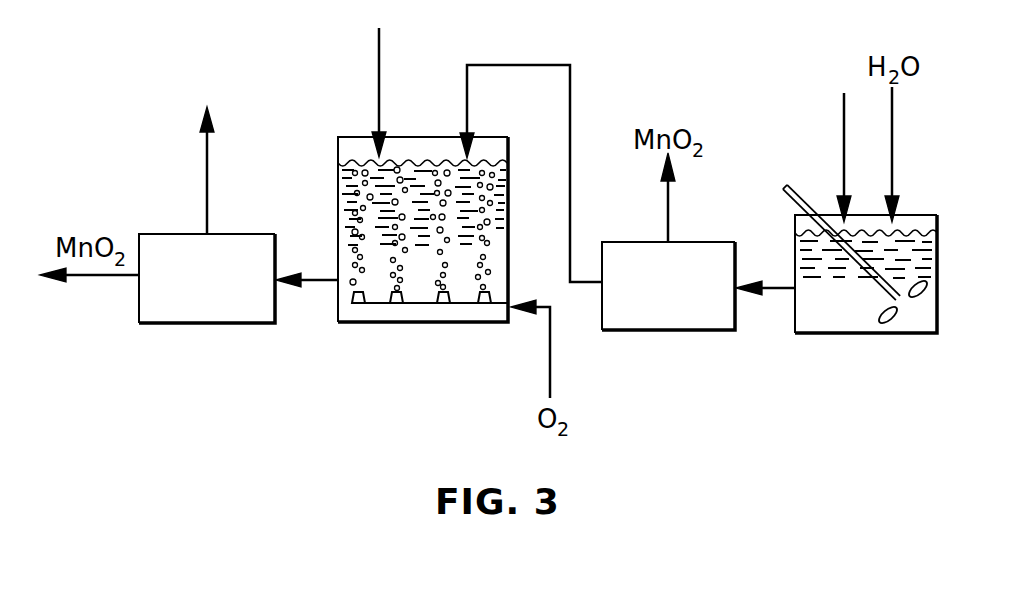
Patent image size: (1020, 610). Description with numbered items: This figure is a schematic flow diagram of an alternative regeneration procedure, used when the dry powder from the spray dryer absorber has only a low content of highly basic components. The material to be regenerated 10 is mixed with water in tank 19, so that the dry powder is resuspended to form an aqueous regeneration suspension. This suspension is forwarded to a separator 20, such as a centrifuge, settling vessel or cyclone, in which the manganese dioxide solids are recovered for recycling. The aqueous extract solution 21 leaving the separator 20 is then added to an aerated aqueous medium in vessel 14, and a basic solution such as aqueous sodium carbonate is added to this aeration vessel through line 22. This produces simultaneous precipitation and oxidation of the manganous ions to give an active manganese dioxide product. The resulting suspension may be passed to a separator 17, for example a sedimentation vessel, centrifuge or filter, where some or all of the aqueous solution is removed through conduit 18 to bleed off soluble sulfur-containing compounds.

The material to be regenerated 10 is at (844, 132).
The aeration vessel 14 is at (425, 325).
The separator 17 is at (205, 313).
The conduit 18 is at (207, 171).
The tank 19 is at (833, 312).
The separator 20 is at (650, 312).
The aqueous extract solution 21 is at (530, 66).
The line 22 is at (379, 69).